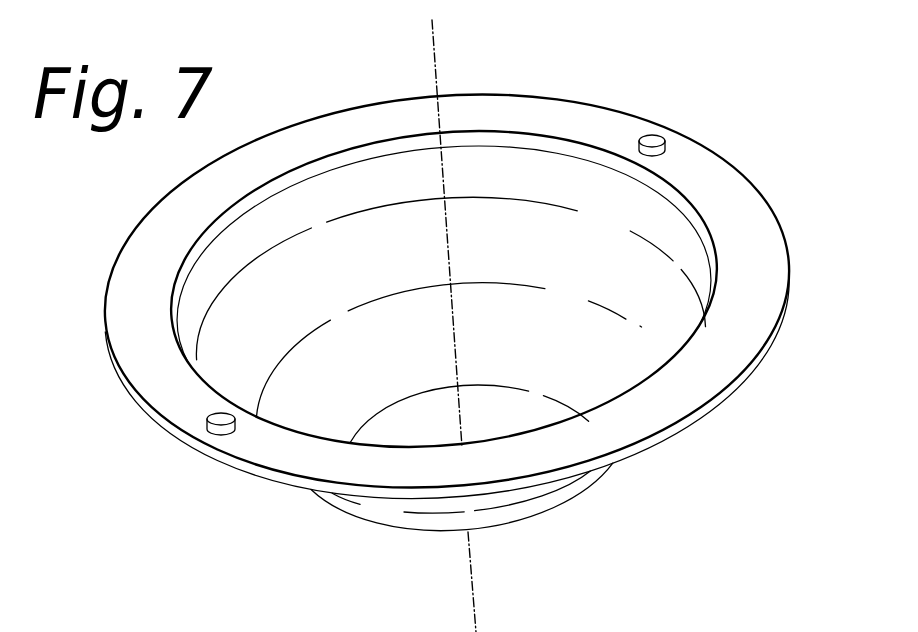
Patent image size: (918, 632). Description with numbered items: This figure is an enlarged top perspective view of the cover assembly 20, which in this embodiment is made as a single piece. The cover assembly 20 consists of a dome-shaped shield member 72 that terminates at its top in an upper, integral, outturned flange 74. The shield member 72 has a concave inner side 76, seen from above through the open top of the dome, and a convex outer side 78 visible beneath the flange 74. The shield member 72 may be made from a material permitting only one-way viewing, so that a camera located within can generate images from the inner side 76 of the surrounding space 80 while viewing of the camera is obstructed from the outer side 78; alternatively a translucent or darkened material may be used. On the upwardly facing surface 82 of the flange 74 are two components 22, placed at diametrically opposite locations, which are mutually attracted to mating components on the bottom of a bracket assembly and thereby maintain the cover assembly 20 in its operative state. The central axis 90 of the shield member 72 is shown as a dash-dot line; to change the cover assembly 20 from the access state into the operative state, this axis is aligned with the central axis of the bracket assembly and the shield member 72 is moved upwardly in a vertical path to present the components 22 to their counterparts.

The cover assembly 20 is at (470, 316).
The component 22 is at (655, 134).
The shield member 72 is at (586, 481).
The outturned flange 74 is at (734, 183).
The concave inner side 76 is at (534, 183).
The convex outer side 78 is at (534, 506).
The surrounding space 80 is at (805, 448).
The upwardly facing surface 82 is at (762, 226).
The central axis 90 is at (437, 62).